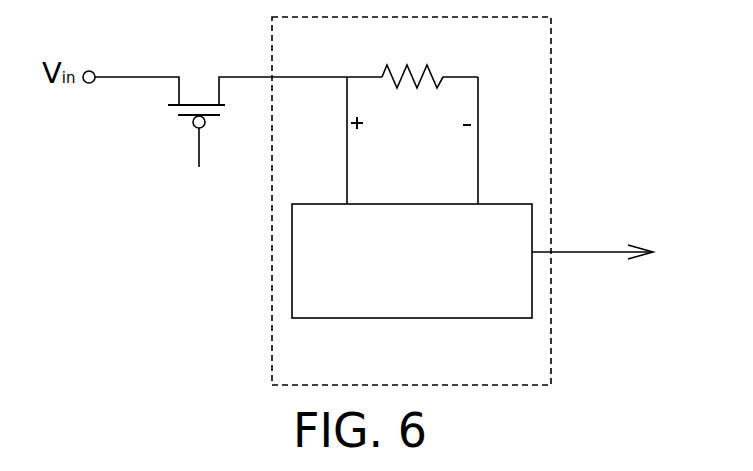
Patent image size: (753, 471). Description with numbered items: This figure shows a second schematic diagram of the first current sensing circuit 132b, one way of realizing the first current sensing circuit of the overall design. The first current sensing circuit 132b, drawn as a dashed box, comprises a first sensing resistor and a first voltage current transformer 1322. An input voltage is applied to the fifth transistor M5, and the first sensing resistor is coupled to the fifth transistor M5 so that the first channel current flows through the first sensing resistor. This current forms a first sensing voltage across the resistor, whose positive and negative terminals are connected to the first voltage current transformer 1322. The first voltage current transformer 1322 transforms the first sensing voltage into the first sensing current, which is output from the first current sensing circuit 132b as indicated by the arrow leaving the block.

The fifth transistor M5 is at (275, 99).
The first current sensing circuit 132b is at (551, 133).
The first voltage current transformer 1322 is at (412, 318).